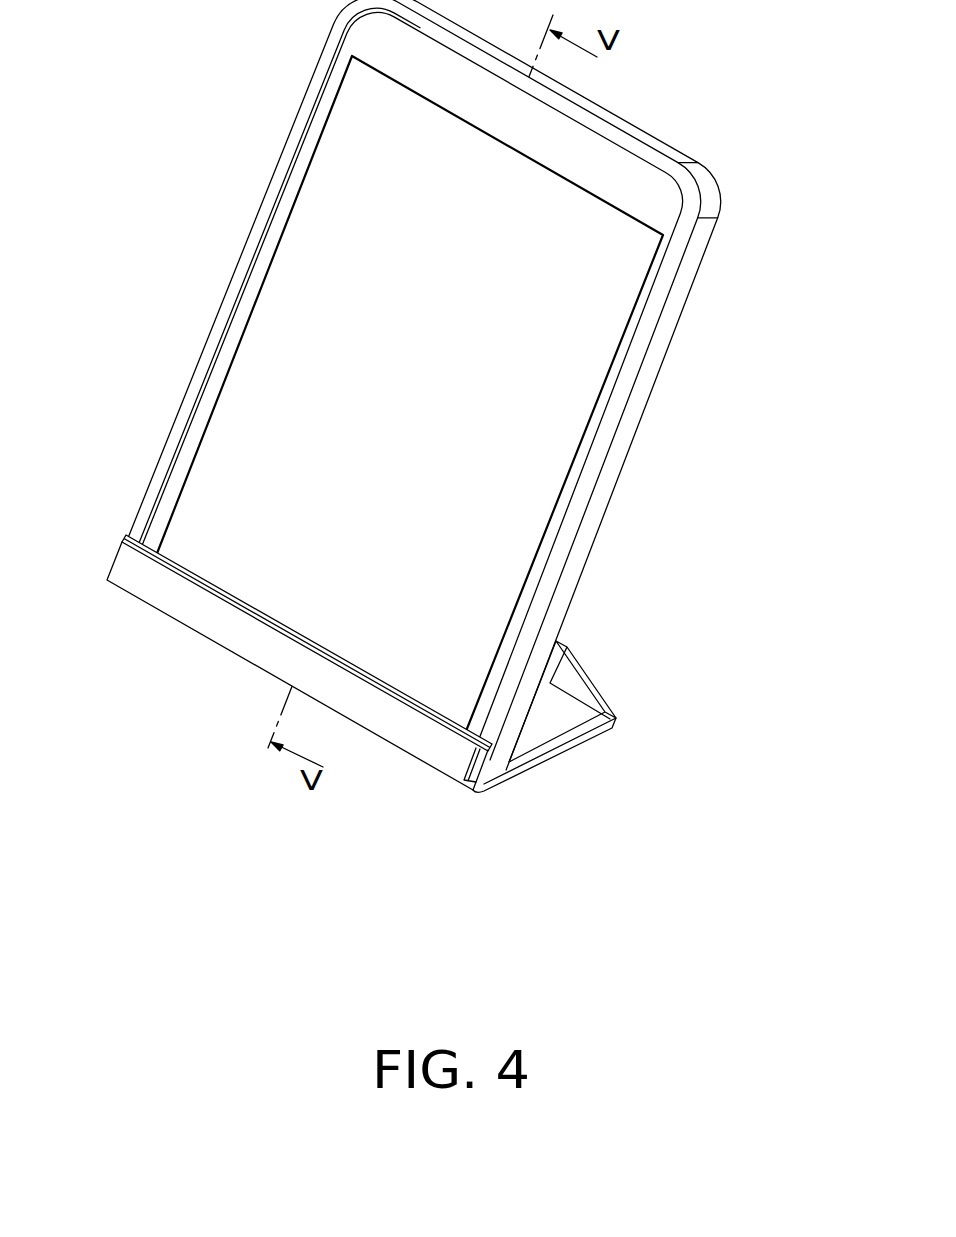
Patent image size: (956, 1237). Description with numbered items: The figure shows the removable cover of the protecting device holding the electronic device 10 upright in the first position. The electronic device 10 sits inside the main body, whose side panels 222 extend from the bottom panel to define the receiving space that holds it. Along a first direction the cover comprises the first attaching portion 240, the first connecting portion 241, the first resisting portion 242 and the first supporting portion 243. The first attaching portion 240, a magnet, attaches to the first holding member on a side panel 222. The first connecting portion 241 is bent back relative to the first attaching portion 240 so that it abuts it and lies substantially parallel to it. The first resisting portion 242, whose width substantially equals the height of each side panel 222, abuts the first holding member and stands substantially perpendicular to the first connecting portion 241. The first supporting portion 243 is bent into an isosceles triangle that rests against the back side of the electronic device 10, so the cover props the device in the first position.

The electronic device 10 is at (282, 352).
The side panel 222 is at (610, 446).
The first attaching portion 240 is at (412, 702).
The first connecting portion 241 is at (213, 618).
The first resisting portion 242 is at (495, 787).
The first supporting portion 243 is at (570, 738).